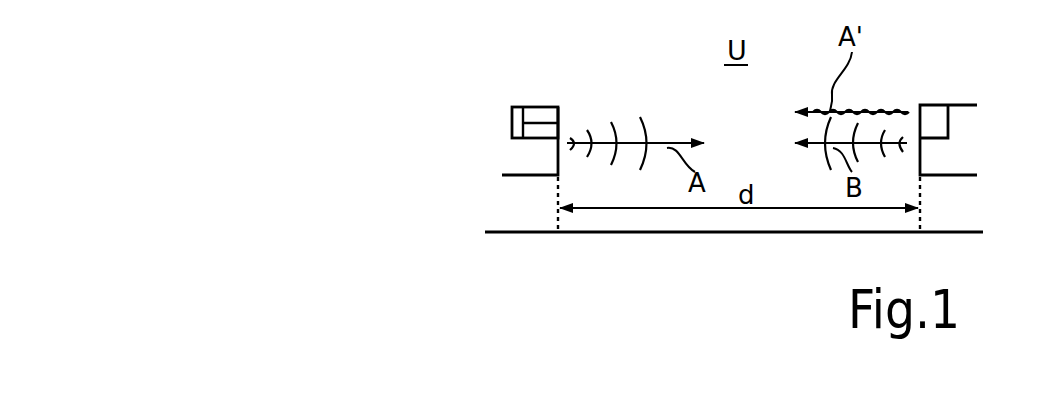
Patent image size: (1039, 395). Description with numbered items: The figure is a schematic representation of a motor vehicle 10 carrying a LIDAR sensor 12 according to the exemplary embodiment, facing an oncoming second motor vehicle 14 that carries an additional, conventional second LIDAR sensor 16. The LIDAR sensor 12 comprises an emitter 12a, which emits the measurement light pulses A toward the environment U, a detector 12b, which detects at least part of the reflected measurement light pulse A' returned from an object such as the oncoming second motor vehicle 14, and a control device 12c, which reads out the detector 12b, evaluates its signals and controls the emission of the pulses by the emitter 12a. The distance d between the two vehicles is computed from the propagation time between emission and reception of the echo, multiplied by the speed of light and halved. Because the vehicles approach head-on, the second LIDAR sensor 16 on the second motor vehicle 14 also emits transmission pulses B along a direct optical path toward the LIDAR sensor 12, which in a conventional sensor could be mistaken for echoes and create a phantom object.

The motor vehicle 10 is at (531, 99).
The LIDAR sensor 12 is at (531, 81).
The emitter 12a is at (558, 128).
The detector 12b is at (557, 113).
The control device 12c is at (512, 125).
The second motor vehicle 14 is at (968, 101).
The second LIDAR sensor 16 is at (932, 113).